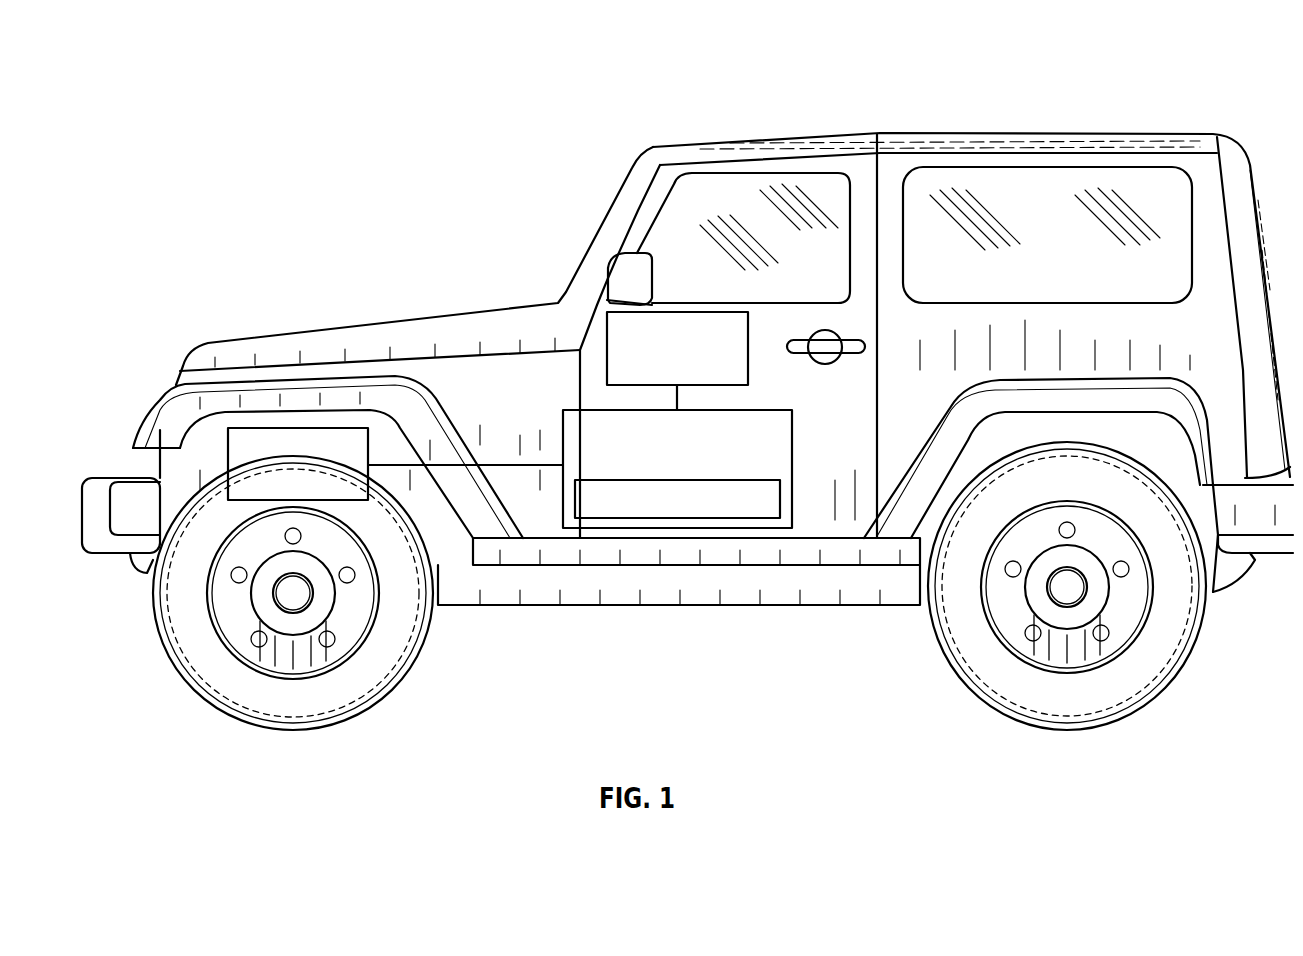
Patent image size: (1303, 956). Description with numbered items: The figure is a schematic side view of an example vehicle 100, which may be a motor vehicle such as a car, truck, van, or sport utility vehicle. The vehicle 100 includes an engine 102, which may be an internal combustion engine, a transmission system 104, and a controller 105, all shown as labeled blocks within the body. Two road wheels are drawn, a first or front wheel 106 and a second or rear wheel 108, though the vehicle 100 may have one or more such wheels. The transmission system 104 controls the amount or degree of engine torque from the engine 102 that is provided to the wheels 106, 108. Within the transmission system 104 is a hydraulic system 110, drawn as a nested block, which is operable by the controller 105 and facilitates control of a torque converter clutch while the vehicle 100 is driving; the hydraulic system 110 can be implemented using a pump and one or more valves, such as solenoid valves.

The vehicle 100 is at (1197, 98).
The engine 102 is at (277, 495).
The transmission system 104 is at (770, 410).
The controller 105 is at (655, 378).
The front wheel 106 is at (166, 663).
The rear wheel 108 is at (946, 669).
The hydraulic system 110 is at (780, 497).